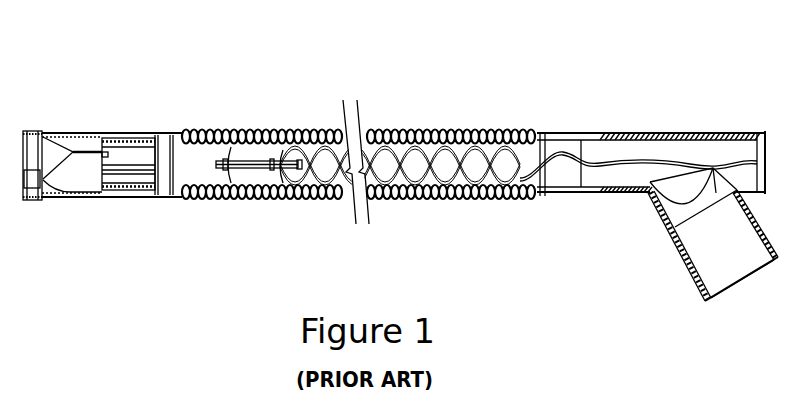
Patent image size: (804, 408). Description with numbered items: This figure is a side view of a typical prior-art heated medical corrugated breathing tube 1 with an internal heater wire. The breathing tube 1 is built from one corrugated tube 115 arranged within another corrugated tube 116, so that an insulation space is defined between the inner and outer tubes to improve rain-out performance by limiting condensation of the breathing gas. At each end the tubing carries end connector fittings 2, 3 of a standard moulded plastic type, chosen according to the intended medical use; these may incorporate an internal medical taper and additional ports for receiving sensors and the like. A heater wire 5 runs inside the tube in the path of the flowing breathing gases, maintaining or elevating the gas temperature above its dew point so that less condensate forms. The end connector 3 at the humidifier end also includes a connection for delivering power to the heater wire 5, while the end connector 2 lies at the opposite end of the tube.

The heated medical corrugated breathing tube 1 is at (400, 157).
The end connector fitting 2 is at (88, 165).
The end connector fitting 3 is at (697, 137).
The heater wire 5 is at (460, 147).
The corrugated tube 115 is at (208, 150).
The corrugated tube 116 is at (493, 136).